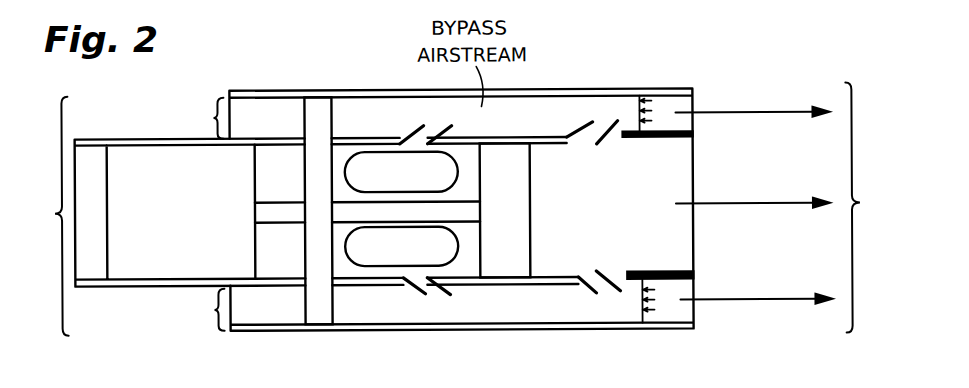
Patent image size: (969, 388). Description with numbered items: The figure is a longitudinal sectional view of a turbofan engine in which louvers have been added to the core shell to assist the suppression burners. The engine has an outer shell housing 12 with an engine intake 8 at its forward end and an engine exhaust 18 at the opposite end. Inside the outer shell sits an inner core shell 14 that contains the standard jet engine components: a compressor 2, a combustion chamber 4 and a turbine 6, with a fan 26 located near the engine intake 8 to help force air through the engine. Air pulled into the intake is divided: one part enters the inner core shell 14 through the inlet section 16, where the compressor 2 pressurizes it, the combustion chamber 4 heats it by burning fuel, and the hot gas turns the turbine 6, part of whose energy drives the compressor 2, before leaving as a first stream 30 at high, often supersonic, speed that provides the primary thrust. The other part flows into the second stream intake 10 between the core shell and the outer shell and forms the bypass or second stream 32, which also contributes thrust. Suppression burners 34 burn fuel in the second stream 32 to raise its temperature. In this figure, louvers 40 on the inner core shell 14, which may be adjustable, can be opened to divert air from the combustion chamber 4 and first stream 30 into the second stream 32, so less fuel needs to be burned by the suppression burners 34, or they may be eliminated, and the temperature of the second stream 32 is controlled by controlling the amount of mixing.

The compressor 2 is at (187, 248).
The combustion chamber 4 is at (377, 177).
The turbine 6 is at (510, 270).
The engine intake 8 is at (46, 216).
The second stream intake 10 is at (204, 214).
The outer shell housing 12 is at (565, 89).
The inner core shell 14 is at (650, 140).
The inlet section 16 is at (90, 150).
The engine exhaust 18 is at (870, 207).
The fan 26 is at (317, 105).
The first stream 30 is at (787, 207).
The second stream 32 is at (781, 117).
The suppression burners 34 is at (665, 112).
The louvers 40 is at (432, 126).